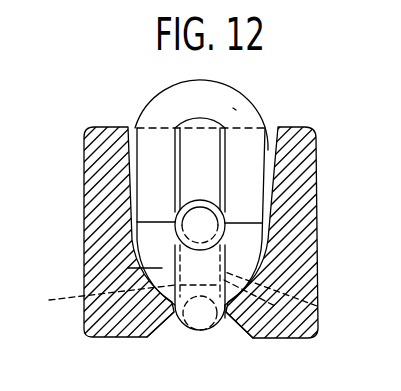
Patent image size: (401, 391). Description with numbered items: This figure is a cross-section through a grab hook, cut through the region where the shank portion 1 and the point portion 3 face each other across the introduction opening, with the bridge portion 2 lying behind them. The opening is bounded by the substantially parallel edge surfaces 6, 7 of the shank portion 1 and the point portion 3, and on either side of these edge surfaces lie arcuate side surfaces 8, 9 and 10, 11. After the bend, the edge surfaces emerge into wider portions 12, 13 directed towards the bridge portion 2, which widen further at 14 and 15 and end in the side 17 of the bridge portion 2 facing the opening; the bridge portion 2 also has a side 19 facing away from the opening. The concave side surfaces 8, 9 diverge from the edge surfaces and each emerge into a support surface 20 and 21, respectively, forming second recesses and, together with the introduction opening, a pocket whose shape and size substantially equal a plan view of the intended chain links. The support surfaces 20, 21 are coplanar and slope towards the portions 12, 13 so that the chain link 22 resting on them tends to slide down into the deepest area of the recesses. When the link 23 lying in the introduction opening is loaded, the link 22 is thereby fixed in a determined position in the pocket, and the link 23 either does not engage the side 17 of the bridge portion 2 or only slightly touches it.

The shank portion 1 is at (103, 222).
The bridge portion 2 is at (260, 116).
The point portion 3 is at (293, 245).
The edge surface 6 is at (176, 328).
The edge surface 7 is at (223, 318).
The side surface 8 is at (162, 268).
The side surface 9 is at (223, 267).
The side surface 10 is at (161, 327).
The side surface 11 is at (235, 328).
The wider portion 12 is at (70, 297).
The wider portion 13 is at (317, 306).
The widened portion 14 is at (137, 239).
The widened portion 15 is at (264, 223).
The side of the bridge portion 17 is at (200, 200).
The side of the bridge portion 19 is at (203, 150).
The support surface 20 is at (127, 175).
The support surface 21 is at (266, 192).
The chain link 22 is at (233, 108).
The link 23 is at (197, 320).